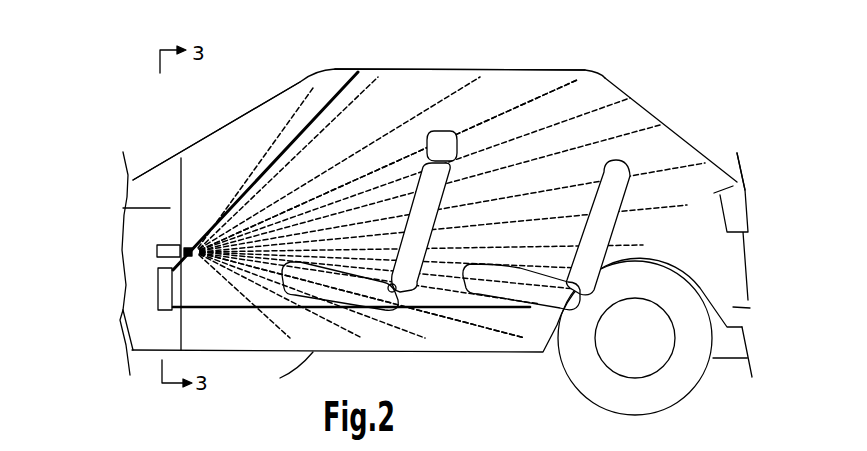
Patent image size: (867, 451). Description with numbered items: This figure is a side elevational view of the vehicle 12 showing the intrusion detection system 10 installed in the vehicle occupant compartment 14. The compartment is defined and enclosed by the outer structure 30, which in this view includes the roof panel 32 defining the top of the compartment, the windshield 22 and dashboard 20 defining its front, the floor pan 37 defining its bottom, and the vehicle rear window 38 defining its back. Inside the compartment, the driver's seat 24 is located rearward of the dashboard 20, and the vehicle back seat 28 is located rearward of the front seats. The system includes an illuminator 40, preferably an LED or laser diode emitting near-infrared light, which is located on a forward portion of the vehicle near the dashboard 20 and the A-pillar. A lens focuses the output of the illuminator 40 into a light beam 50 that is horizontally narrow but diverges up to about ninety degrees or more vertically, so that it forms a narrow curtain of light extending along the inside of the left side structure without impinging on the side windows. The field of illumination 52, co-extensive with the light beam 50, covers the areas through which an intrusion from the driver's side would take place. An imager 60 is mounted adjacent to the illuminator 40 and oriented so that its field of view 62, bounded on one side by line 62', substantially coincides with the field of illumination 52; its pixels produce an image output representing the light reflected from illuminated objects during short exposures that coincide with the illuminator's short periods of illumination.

The intrusion detection system 10 is at (104, 307).
The vehicle 12 is at (108, 347).
The vehicle occupant compartment 14 is at (582, 103).
The dashboard 20 is at (153, 202).
The windshield 22 is at (185, 147).
The driver's seat 24 is at (446, 131).
The vehicle back seat 28 is at (627, 165).
The outer structure 30 is at (292, 78).
The roof panel 32 is at (404, 68).
The floor pan 37 is at (312, 356).
The vehicle rear window 38 is at (694, 138).
The illuminator 40 is at (157, 251).
The light beam 50 is at (264, 150).
The field of illumination 52 is at (497, 97).
The imager 60 is at (158, 283).
The field of view 62 is at (452, 213).
The line 62' is at (362, 322).